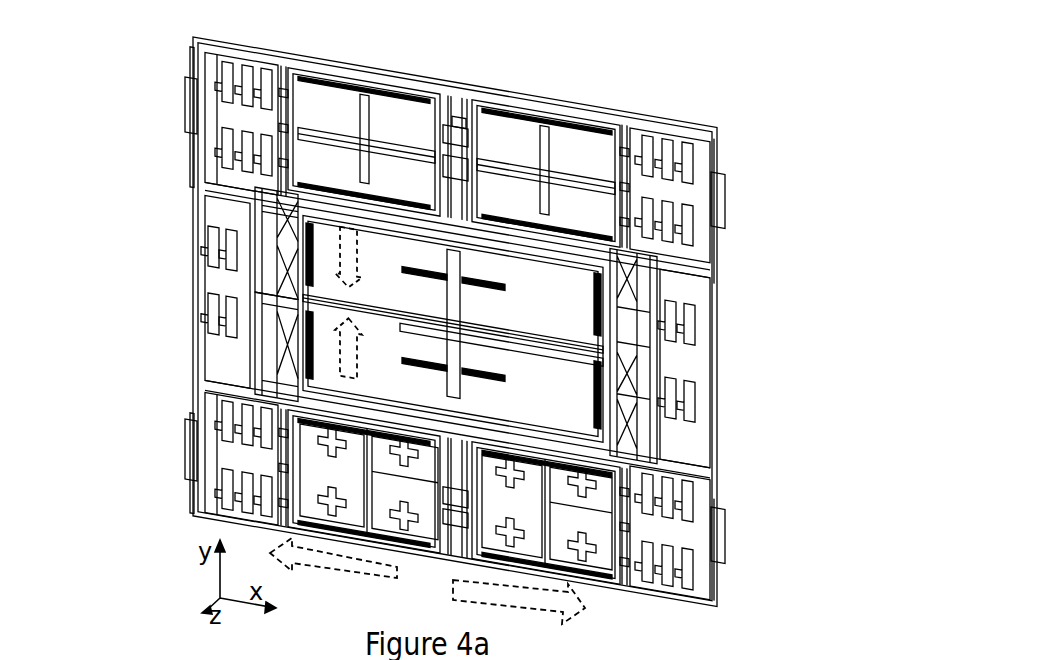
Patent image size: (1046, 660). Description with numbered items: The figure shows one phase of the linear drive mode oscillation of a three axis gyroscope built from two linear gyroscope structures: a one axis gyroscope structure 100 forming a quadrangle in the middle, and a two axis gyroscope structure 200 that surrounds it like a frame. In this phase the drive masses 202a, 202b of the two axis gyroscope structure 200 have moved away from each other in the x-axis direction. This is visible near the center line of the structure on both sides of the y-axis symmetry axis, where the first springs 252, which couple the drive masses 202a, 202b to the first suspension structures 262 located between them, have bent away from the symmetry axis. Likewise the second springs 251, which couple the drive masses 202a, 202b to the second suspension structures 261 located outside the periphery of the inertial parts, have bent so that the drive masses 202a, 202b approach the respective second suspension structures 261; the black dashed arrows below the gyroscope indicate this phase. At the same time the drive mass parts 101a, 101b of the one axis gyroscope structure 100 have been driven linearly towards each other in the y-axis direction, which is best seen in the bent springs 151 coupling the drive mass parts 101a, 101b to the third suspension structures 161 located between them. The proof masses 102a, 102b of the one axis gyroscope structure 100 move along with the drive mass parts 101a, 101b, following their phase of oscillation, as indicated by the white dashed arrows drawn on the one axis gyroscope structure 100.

The two axis gyroscope structure 200 is at (738, 116).
The one axis gyroscope structure 100 is at (570, 307).
The drive mass part 101a is at (323, 248).
The drive mass part 101b is at (297, 315).
The proof mass 102a is at (262, 272).
The proof mass 102b is at (323, 357).
The spring 151 is at (583, 335).
The third suspension structure 161 is at (508, 333).
The drive mass 202a is at (222, 200).
The drive mass 202b is at (672, 263).
The second spring 251 is at (192, 60).
The first spring 252 is at (455, 133).
The second suspension structure 261 is at (190, 102).
The first suspension structure 262 is at (460, 132).